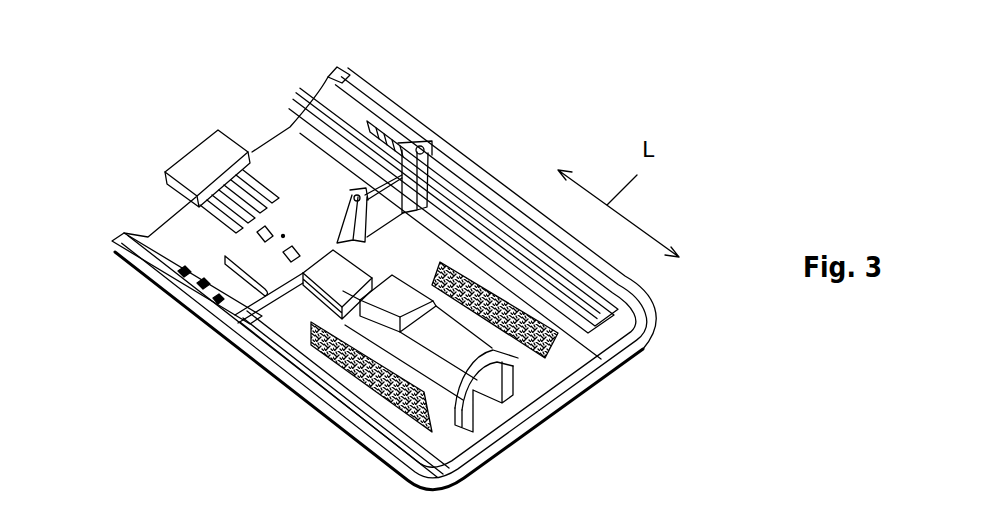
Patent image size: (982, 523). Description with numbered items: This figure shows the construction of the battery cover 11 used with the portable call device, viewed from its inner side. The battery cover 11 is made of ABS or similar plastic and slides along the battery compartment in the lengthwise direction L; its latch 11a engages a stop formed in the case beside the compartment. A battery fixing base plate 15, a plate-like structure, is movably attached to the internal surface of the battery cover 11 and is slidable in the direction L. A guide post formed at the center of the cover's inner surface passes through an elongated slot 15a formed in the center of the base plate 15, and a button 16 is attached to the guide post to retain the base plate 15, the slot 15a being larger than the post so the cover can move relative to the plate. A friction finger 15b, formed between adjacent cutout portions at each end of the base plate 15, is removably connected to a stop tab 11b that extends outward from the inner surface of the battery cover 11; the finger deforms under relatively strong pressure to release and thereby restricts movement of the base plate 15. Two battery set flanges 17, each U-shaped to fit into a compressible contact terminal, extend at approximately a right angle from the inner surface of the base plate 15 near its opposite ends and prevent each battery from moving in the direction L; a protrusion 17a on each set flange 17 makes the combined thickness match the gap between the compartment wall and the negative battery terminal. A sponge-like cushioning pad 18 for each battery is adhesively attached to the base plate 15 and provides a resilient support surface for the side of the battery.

The battery cover 11 is at (323, 122).
The latch 11a is at (190, 157).
The stop tab 11b is at (257, 240).
The battery fixing base plate 15 is at (432, 257).
The slot 15a is at (337, 417).
The friction finger 15b is at (303, 272).
The button 16 is at (395, 315).
The battery set flange 17 is at (420, 177).
The protrusion 17a is at (357, 188).
The cushioning pad 18 is at (588, 353).